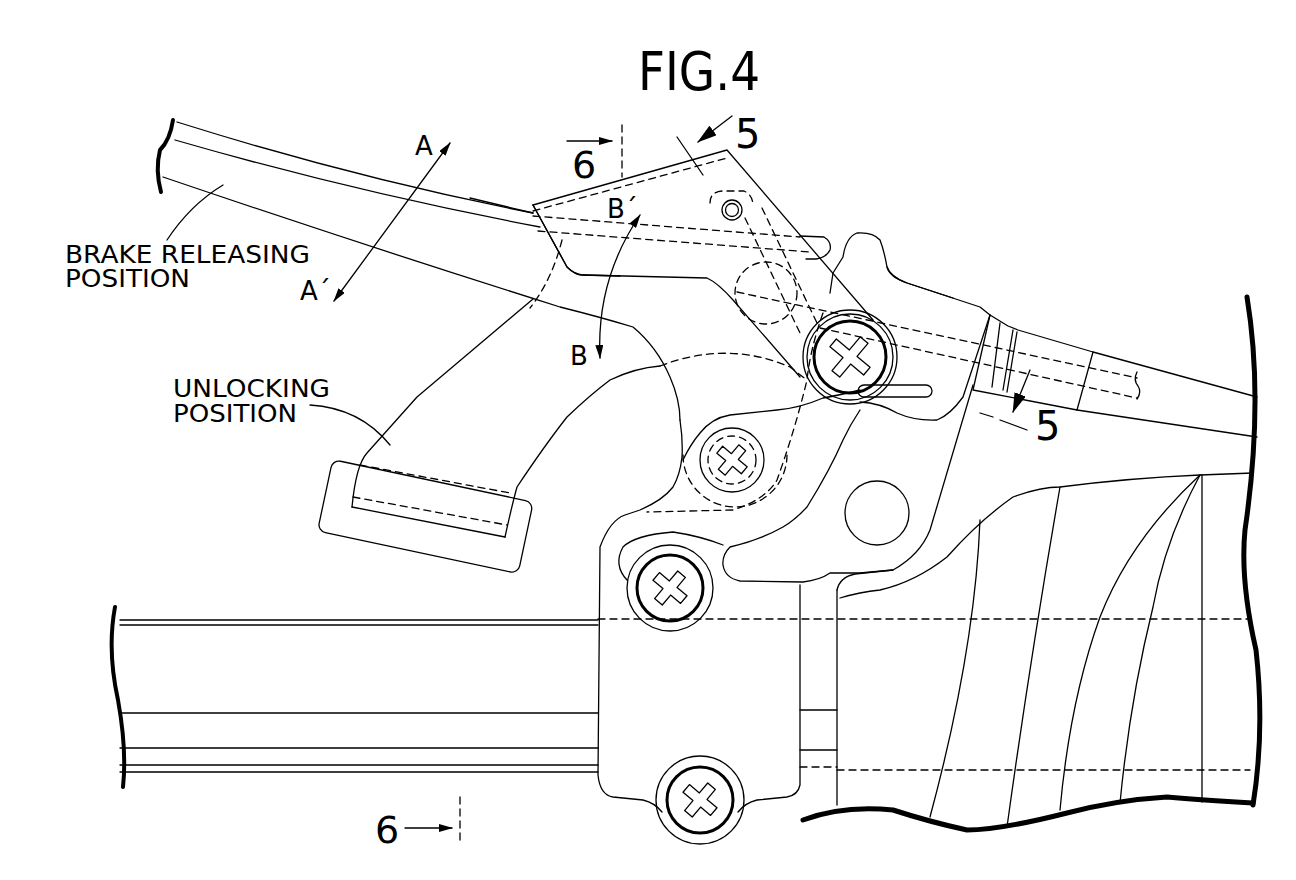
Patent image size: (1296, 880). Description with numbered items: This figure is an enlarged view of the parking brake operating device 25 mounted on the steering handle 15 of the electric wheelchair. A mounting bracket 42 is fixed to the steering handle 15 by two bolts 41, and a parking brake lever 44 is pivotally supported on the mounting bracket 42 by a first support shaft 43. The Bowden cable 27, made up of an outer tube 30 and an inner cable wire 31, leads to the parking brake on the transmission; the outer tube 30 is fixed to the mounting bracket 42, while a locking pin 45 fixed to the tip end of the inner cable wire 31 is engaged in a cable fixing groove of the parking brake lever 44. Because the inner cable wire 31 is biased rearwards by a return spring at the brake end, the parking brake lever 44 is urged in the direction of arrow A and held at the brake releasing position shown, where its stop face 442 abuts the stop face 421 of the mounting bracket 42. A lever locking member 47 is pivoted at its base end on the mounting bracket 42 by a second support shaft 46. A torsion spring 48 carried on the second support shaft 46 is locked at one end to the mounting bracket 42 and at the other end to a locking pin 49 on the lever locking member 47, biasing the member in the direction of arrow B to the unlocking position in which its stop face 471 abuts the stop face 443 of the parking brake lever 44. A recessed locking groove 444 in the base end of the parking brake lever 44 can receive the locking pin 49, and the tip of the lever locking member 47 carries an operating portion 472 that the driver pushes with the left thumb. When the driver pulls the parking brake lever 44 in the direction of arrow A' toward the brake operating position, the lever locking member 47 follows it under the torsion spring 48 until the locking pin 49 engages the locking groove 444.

The steering handle 15 is at (232, 633).
The parking brake operating device 25 is at (542, 175).
The Bowden cable 27 is at (997, 340).
The outer tube 30 is at (1167, 360).
The inner cable wire 31 is at (1033, 353).
The bolts 41 is at (670, 615).
The mounting bracket 42 is at (940, 528).
The first support shaft 43 is at (718, 459).
The parking brake lever 44 is at (351, 168).
The locking pin 45 is at (758, 295).
The second support shaft 46 is at (866, 355).
The lever locking member 47 is at (445, 368).
The torsion spring 48 is at (907, 398).
The locking pin 49 is at (722, 212).
The stop face 421 is at (840, 260).
The stop face 442 is at (880, 297).
The stop face 443 is at (511, 211).
The locking groove 444 is at (823, 313).
The stop face 471 is at (540, 217).
The operating portion 472 is at (418, 538).